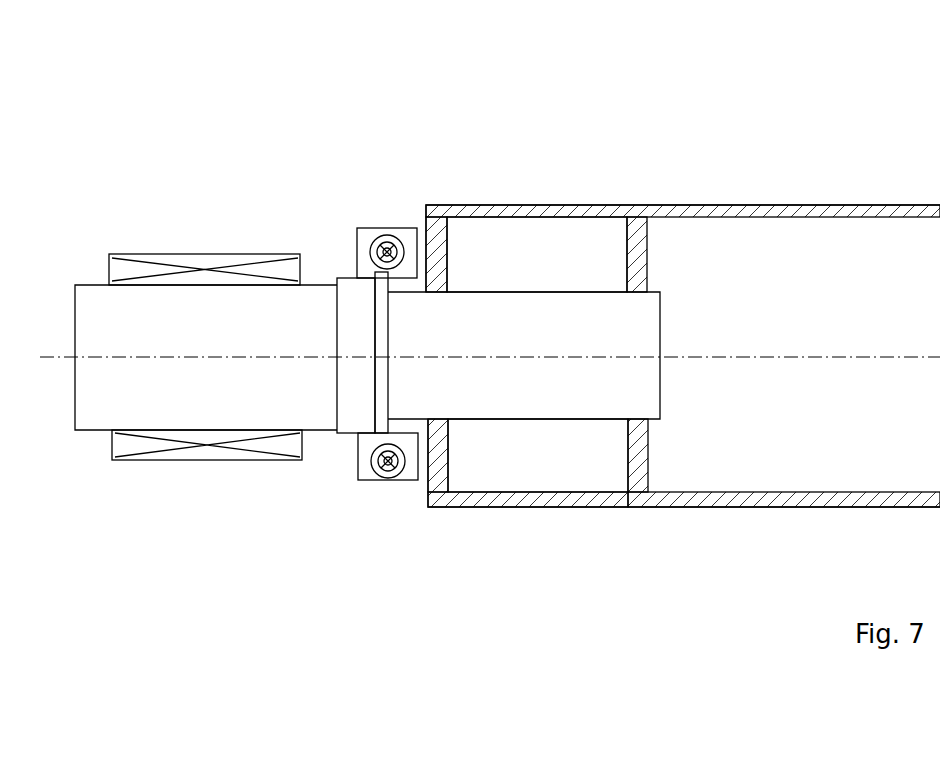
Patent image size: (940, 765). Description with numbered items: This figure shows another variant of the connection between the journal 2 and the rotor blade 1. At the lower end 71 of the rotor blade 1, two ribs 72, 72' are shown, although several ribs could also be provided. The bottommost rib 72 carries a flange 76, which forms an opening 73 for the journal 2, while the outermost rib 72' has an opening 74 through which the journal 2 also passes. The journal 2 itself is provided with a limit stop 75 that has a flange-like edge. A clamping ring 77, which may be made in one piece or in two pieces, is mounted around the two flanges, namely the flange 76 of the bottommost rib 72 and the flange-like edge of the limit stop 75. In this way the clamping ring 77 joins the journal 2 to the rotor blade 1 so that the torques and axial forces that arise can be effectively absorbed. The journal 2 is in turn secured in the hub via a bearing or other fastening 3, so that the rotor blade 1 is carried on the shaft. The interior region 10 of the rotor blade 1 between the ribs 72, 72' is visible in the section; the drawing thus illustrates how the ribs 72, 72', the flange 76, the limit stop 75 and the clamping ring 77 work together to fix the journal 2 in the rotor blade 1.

The rotor blade 1 is at (850, 203).
The interior space of housing 10 is at (878, 284).
The journal 2 is at (314, 357).
The bearing or other fastening 3 is at (200, 267).
The lower end 71 is at (648, 150).
The rib 72 is at (528, 547).
The rib 72' is at (739, 548).
The opening 73 is at (427, 440).
The opening 74 is at (647, 427).
The limit stop 75 is at (356, 414).
The flange 76 is at (405, 292).
The clamping ring 77 is at (393, 228).